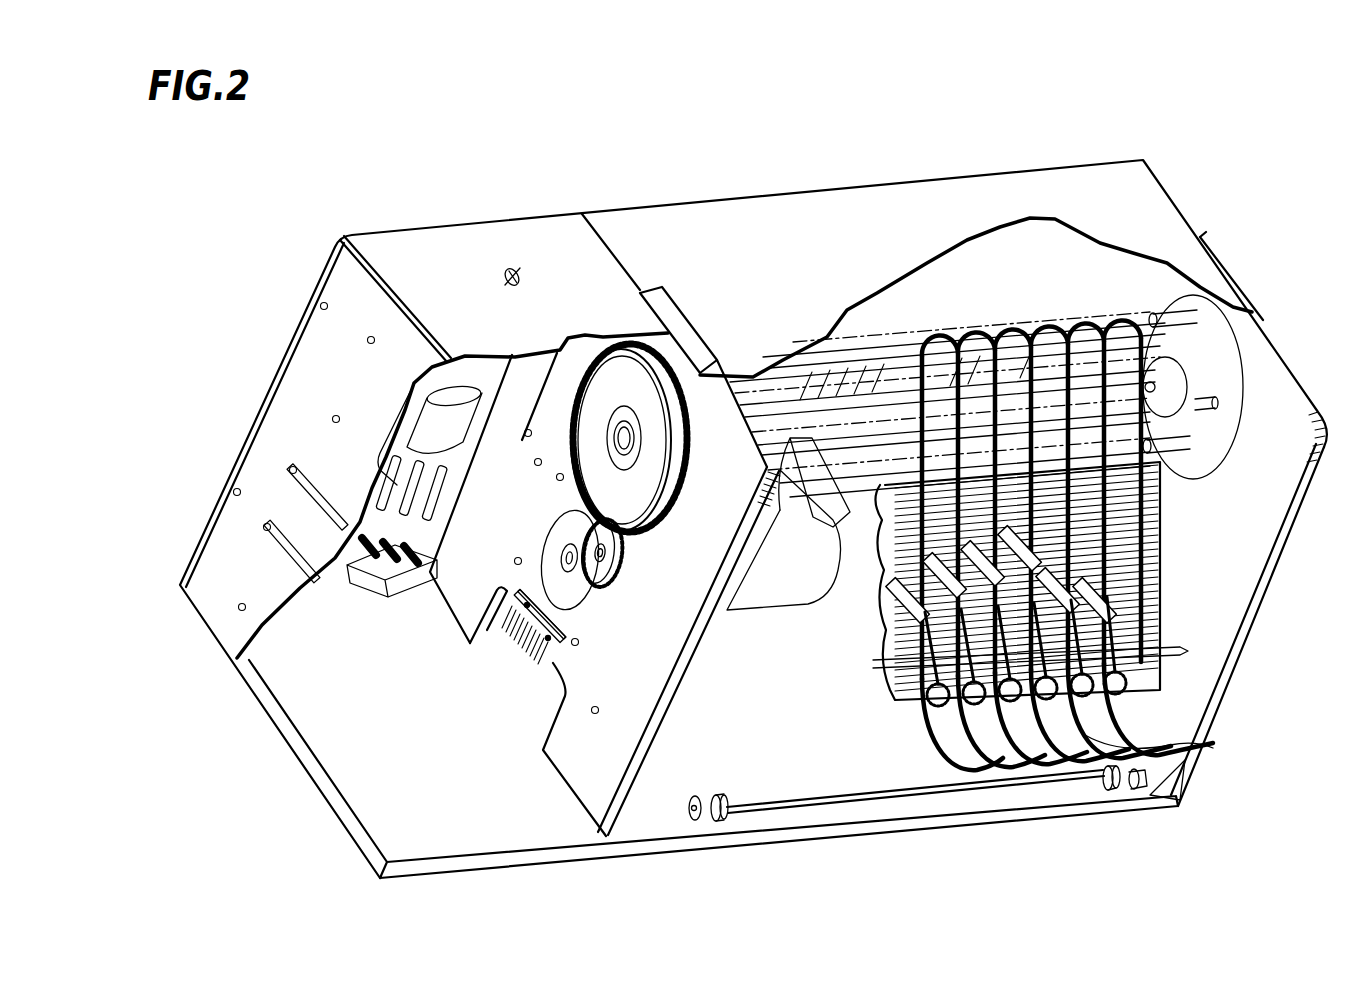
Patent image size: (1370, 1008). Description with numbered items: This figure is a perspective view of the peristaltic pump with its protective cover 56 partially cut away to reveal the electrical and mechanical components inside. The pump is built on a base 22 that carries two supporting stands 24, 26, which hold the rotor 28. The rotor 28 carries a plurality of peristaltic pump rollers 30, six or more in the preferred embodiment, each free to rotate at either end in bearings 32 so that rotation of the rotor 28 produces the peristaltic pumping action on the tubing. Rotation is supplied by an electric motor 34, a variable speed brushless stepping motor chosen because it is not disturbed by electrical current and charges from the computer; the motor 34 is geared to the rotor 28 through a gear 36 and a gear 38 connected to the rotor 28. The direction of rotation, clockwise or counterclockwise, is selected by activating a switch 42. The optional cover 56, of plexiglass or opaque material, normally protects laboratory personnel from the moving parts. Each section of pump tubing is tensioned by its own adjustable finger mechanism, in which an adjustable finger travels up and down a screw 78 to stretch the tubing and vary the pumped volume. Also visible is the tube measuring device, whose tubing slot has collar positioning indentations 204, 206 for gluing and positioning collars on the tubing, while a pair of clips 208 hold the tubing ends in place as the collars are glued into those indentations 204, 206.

The base 22 is at (905, 823).
The supporting stand 24 is at (1283, 537).
The supporting stand 26 is at (697, 658).
The rotor 28 is at (895, 405).
The peristaltic pump rollers 30 is at (1165, 333).
The bearings 32 is at (1220, 403).
The electric motor 34 is at (795, 571).
The gear 36 is at (607, 570).
The gear 38 is at (658, 480).
The switch 42 is at (508, 270).
The cover 56 is at (752, 205).
The screw 78 is at (1123, 717).
The collar positioning indentation 204 is at (727, 818).
The collar positioning indentation 206 is at (1107, 790).
The clips 208 is at (697, 818).